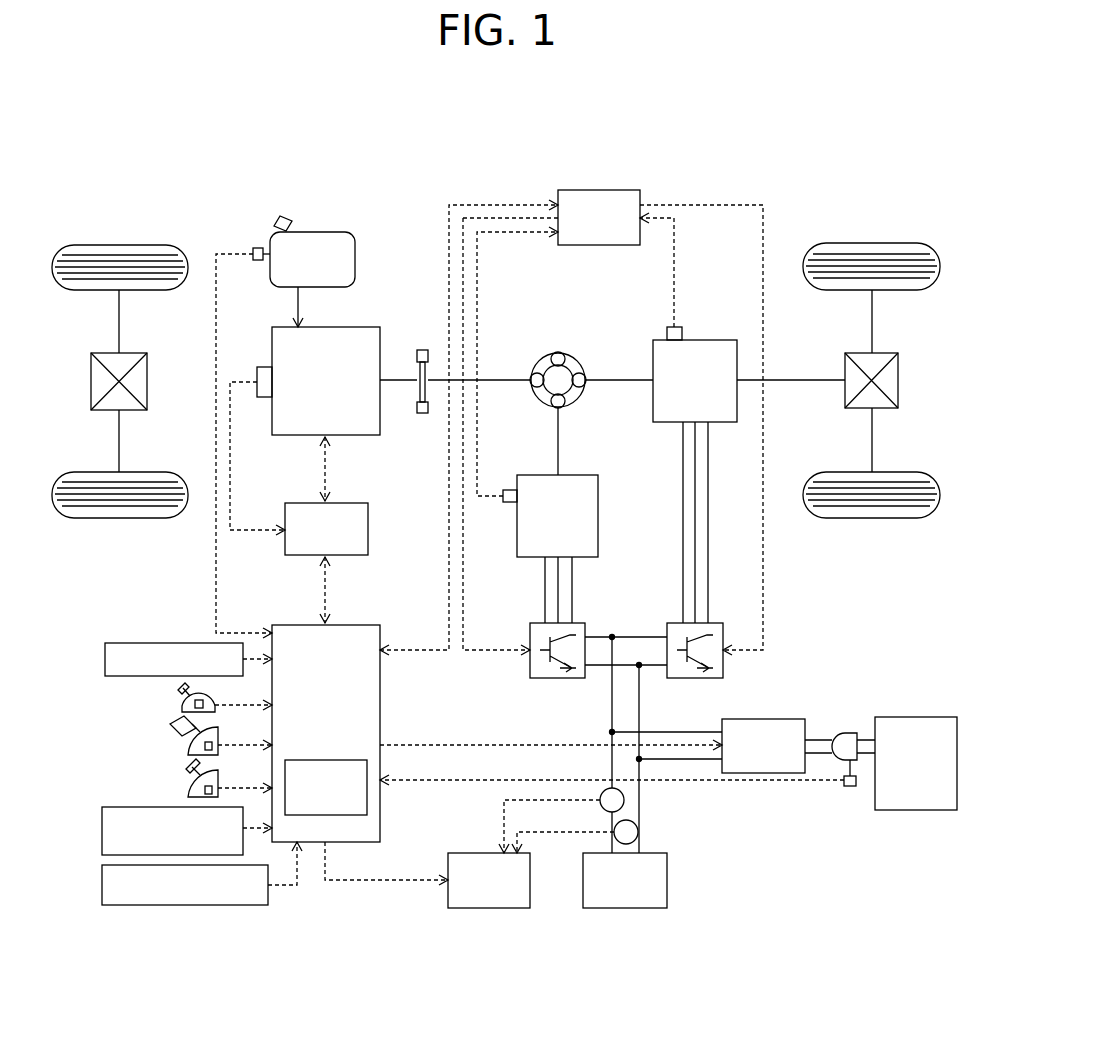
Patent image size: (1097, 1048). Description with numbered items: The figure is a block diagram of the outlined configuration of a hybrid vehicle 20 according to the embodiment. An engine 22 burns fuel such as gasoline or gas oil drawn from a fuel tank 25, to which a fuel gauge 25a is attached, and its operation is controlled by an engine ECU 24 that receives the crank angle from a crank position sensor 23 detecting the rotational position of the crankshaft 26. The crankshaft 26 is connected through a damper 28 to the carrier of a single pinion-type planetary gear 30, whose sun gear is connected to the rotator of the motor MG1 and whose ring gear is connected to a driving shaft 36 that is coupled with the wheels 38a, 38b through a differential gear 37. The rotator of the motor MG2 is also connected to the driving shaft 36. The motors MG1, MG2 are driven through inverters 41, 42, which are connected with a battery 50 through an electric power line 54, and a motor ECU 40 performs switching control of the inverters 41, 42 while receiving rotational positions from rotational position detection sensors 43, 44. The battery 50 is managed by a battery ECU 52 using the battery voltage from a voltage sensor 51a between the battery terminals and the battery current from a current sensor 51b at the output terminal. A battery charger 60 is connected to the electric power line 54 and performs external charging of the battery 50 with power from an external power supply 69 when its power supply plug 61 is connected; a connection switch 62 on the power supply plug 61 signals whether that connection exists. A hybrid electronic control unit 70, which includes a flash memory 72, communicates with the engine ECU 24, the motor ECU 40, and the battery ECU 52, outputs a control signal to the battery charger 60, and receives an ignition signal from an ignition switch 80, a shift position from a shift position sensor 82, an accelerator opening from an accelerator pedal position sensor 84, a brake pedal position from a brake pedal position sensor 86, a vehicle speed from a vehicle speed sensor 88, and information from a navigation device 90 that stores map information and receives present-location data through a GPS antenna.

The hybrid vehicle 20 is at (738, 162).
The engine 22 is at (360, 327).
The crank position sensor 23 is at (265, 367).
The engine electronic control unit 24 is at (345, 503).
The fuel tank 25 is at (332, 232).
The fuel gauge 25a is at (253, 248).
The crankshaft 26 is at (395, 380).
The damper 28 is at (421, 413).
The planetary gear 30 is at (558, 353).
The driving shaft 36 is at (810, 380).
The differential gear 37 is at (885, 353).
The wheel 38a is at (873, 243).
The wheel 38b is at (873, 518).
The motor electronic control unit 40 is at (612, 190).
The inverter 41 is at (580, 623).
The inverter 42 is at (718, 623).
The rotational position detection sensor 43 is at (512, 489).
The rotational position detection sensor 44 is at (668, 326).
The battery 50 is at (667, 880).
The voltage sensor 51a is at (638, 833).
The current sensor 51b is at (624, 800).
The battery electronic control unit 52 is at (475, 853).
The electric power line 54 is at (634, 665).
The battery charger 60 is at (765, 719).
The power supply plug 61 is at (850, 733).
The connection switch 62 is at (850, 786).
The external power supply 69 is at (912, 717).
The hybrid electronic control unit 70 is at (352, 625).
The flash memory 72 is at (348, 760).
The ignition switch 80 is at (105, 658).
The shift position sensor 82 is at (182, 702).
The accelerator pedal position sensor 84 is at (188, 748).
The brake pedal position sensor 86 is at (188, 790).
The vehicle speed sensor 88 is at (102, 828).
The navigation device 90 is at (102, 885).
The motor MG1 is at (585, 475).
The motor MG2 is at (708, 340).